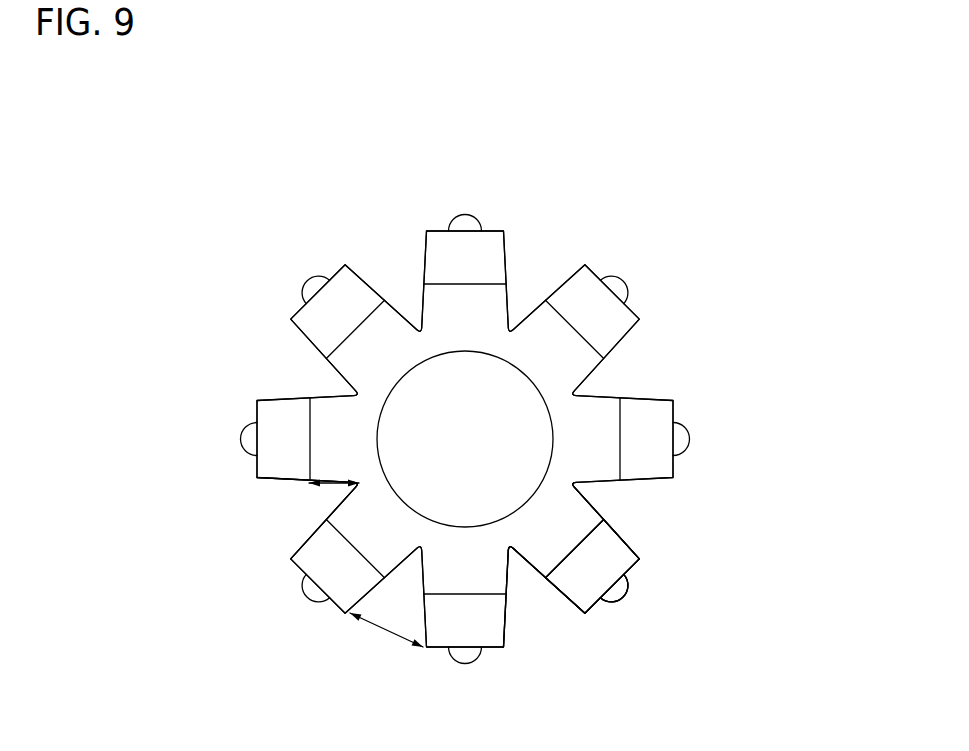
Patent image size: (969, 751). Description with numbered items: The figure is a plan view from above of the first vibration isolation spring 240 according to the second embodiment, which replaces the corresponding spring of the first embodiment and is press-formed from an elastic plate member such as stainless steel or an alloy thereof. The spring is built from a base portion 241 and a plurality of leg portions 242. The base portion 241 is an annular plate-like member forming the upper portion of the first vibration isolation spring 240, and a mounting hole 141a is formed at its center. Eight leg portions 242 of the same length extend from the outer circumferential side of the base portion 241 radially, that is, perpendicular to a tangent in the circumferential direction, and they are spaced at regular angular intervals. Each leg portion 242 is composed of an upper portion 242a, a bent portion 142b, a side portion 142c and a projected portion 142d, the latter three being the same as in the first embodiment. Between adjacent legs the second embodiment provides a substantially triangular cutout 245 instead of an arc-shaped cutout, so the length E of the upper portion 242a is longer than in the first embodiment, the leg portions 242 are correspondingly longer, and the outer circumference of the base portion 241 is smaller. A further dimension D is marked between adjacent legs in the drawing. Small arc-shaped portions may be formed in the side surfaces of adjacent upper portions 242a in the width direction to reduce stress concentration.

The first vibration isolation spring 240 is at (696, 196).
The base portion 241 is at (435, 344).
The mounting hole 141a is at (438, 407).
The leg portion 242 is at (722, 487).
The upper portion 242a is at (570, 523).
The bent portion 142b is at (597, 530).
The side portion 142c is at (600, 570).
The projected portion 142d is at (627, 589).
The cutout 245 is at (337, 505).
The length of the upper portion E is at (334, 493).
The dimension D is at (386, 636).